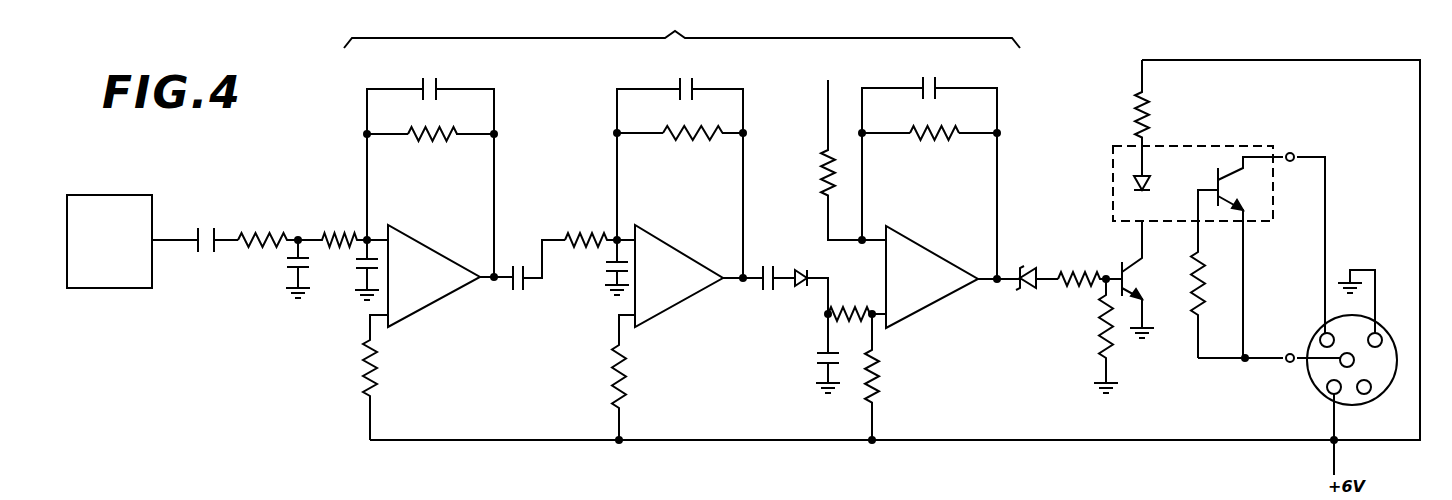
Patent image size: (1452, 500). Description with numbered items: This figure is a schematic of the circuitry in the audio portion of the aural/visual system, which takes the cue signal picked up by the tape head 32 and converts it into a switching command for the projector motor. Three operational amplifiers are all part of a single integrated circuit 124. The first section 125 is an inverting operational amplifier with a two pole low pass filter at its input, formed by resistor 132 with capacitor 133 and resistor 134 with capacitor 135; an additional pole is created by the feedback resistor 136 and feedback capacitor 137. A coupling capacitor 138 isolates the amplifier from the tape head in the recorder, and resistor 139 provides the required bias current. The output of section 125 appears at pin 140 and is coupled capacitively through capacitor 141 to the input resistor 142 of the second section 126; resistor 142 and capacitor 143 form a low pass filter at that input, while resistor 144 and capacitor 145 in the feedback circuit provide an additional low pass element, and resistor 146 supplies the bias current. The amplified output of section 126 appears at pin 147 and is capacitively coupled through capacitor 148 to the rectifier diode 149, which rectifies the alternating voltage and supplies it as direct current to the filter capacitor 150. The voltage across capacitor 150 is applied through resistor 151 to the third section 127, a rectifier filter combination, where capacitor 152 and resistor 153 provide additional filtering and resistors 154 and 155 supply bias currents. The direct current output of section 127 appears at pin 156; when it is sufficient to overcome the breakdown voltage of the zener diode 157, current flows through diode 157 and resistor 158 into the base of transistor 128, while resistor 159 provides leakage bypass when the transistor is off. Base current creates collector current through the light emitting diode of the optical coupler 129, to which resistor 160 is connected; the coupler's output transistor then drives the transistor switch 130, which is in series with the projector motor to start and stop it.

The tape head 32 is at (120, 193).
The integrated circuit 124 is at (700, 29).
The first section 125 is at (407, 252).
The second section 126 is at (652, 250).
The third section 127 is at (903, 252).
The transistor 128 is at (1132, 285).
The optical coupler 129 is at (1185, 148).
The transistor switch 130 is at (1245, 212).
The resistor 132 is at (258, 233).
The capacitor 133 is at (288, 262).
The resistor 134 is at (330, 233).
The capacitor 135 is at (352, 266).
The feedback resistor 136 is at (446, 140).
The feedback capacitor 137 is at (436, 80).
The coupling capacitor 138 is at (208, 228).
The resistor 139 is at (365, 375).
The pin 140 is at (480, 282).
The capacitor 141 is at (508, 262).
The input resistor 142 is at (592, 218).
The capacitor 143 is at (602, 268).
The resistor 144 is at (692, 143).
The capacitor 145 is at (688, 80).
The resistor 146 is at (606, 378).
The pin 147 is at (722, 283).
The capacitor 148 is at (768, 268).
The rectifier diode 149 is at (801, 290).
The filter capacitor 150 is at (816, 360).
The resistor 151 is at (850, 306).
The capacitor 152 is at (920, 80).
The resistor 153 is at (952, 112).
The resistor 154 is at (822, 185).
The resistor 155 is at (880, 370).
The pin 156 is at (980, 283).
The zener diode 157 is at (1030, 270).
The resistor 158 is at (1088, 270).
The resistor 159 is at (1100, 340).
The resistor 160 is at (1137, 98).